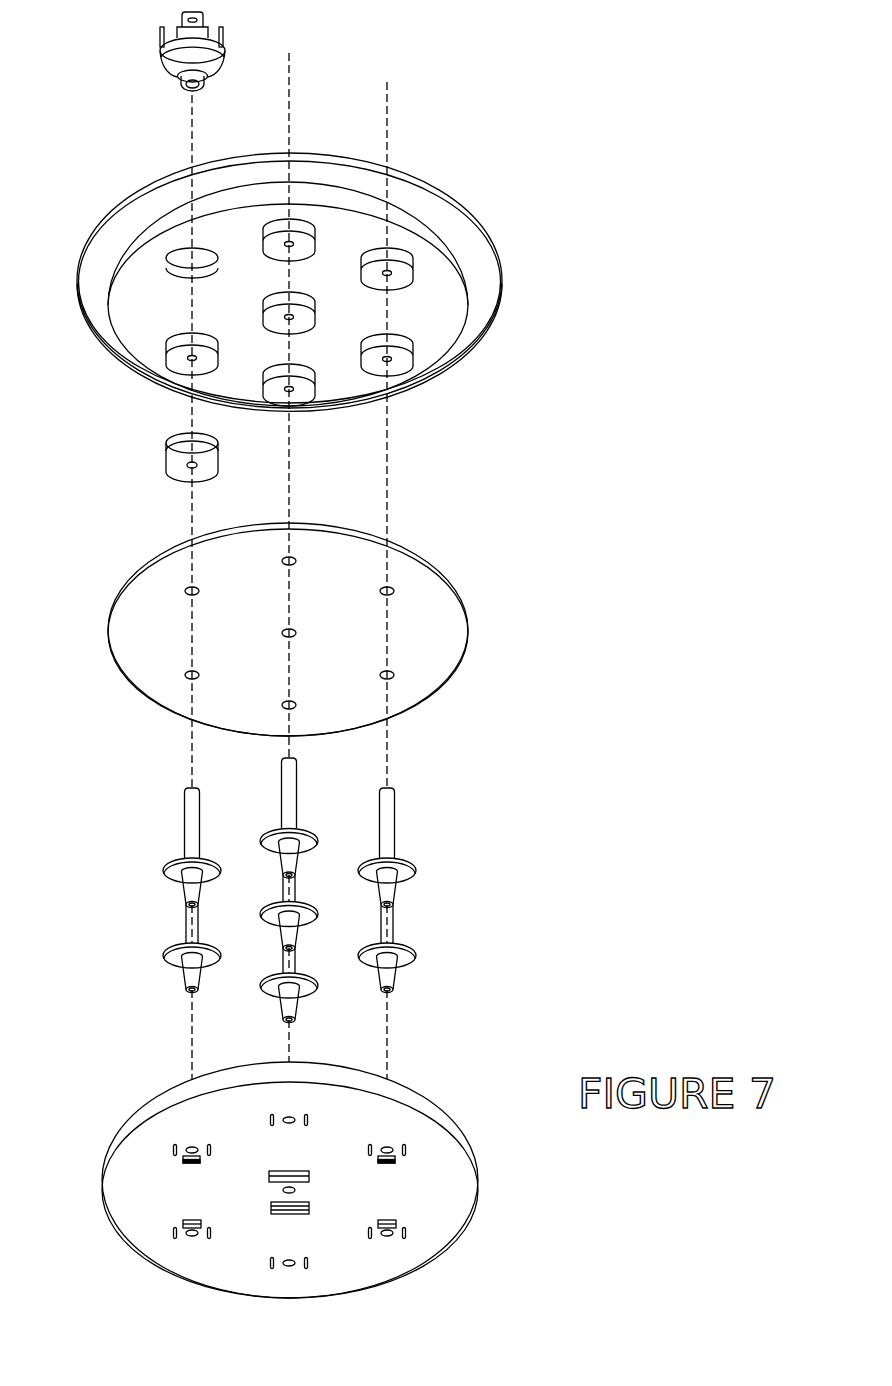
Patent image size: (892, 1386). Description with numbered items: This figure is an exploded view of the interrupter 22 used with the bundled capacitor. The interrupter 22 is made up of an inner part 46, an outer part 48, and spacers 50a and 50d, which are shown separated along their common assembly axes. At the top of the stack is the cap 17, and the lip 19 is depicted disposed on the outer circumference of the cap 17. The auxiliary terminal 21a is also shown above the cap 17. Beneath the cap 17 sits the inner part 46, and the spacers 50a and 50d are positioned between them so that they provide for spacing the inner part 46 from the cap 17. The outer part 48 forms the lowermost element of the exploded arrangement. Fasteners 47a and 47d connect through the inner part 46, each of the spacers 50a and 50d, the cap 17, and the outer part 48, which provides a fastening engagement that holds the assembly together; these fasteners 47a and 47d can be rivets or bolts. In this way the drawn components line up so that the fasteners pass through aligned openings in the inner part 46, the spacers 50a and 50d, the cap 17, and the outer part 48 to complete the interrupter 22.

The interrupter 22 is at (527, 128).
The auxiliary terminal 21a is at (170, 88).
The lip 19 is at (95, 307).
The cap 17 is at (319, 298).
The spacer 50d is at (404, 362).
The spacer 50a is at (178, 464).
The inner part 46 is at (440, 645).
The fastener 47a is at (177, 876).
The fastener 47d is at (403, 958).
The outer part 48 is at (447, 1202).